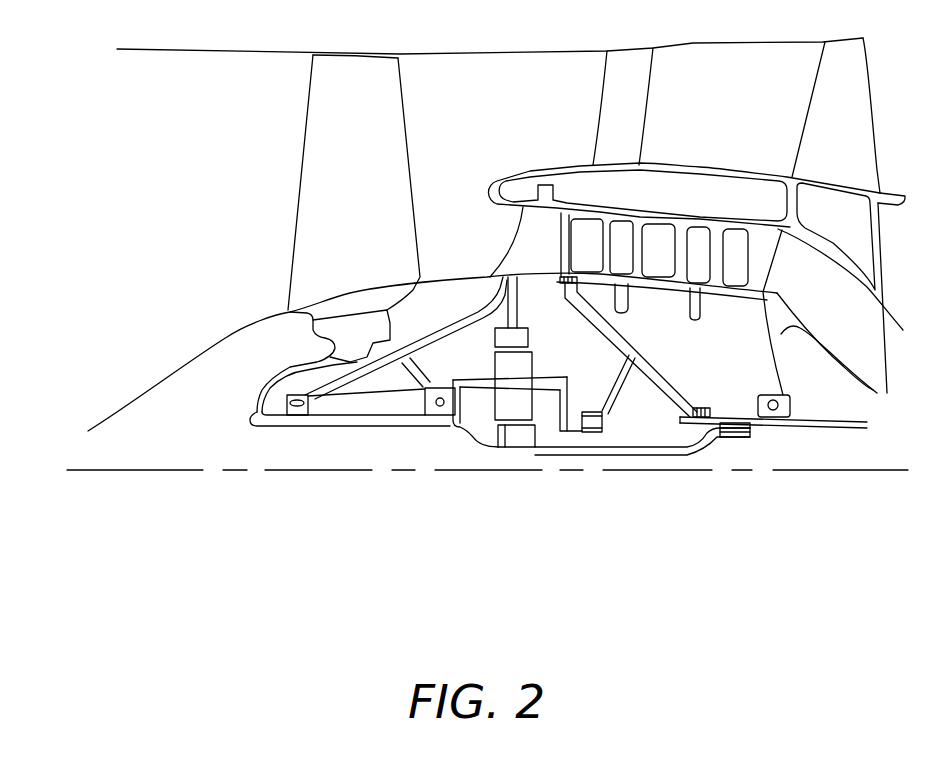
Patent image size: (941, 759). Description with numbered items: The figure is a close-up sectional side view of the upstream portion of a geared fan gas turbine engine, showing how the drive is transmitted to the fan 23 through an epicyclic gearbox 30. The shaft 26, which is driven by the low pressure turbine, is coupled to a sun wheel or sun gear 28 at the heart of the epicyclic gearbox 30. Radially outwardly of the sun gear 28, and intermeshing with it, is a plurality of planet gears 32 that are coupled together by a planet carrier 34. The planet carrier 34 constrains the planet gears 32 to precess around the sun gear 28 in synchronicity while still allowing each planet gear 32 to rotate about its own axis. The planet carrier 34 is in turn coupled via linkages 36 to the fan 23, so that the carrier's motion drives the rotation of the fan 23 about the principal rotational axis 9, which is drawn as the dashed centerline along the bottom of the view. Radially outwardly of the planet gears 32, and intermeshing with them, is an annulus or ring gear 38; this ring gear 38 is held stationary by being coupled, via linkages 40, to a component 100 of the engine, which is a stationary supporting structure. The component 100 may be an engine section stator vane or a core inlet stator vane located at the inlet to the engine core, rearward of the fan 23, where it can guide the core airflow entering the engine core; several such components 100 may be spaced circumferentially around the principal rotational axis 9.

The fan 23 is at (330, 183).
The component 100 is at (517, 228).
The linkages 40 is at (517, 310).
The ring gear 38 is at (517, 337).
The linkages 36 is at (477, 423).
The epicyclic gearbox 30 is at (500, 412).
The planet gears 32 is at (487, 430).
The sun gear 28 is at (515, 438).
The planet carrier 34 is at (553, 416).
The shaft 26 is at (656, 450).
The principal rotational axis 9 is at (183, 472).